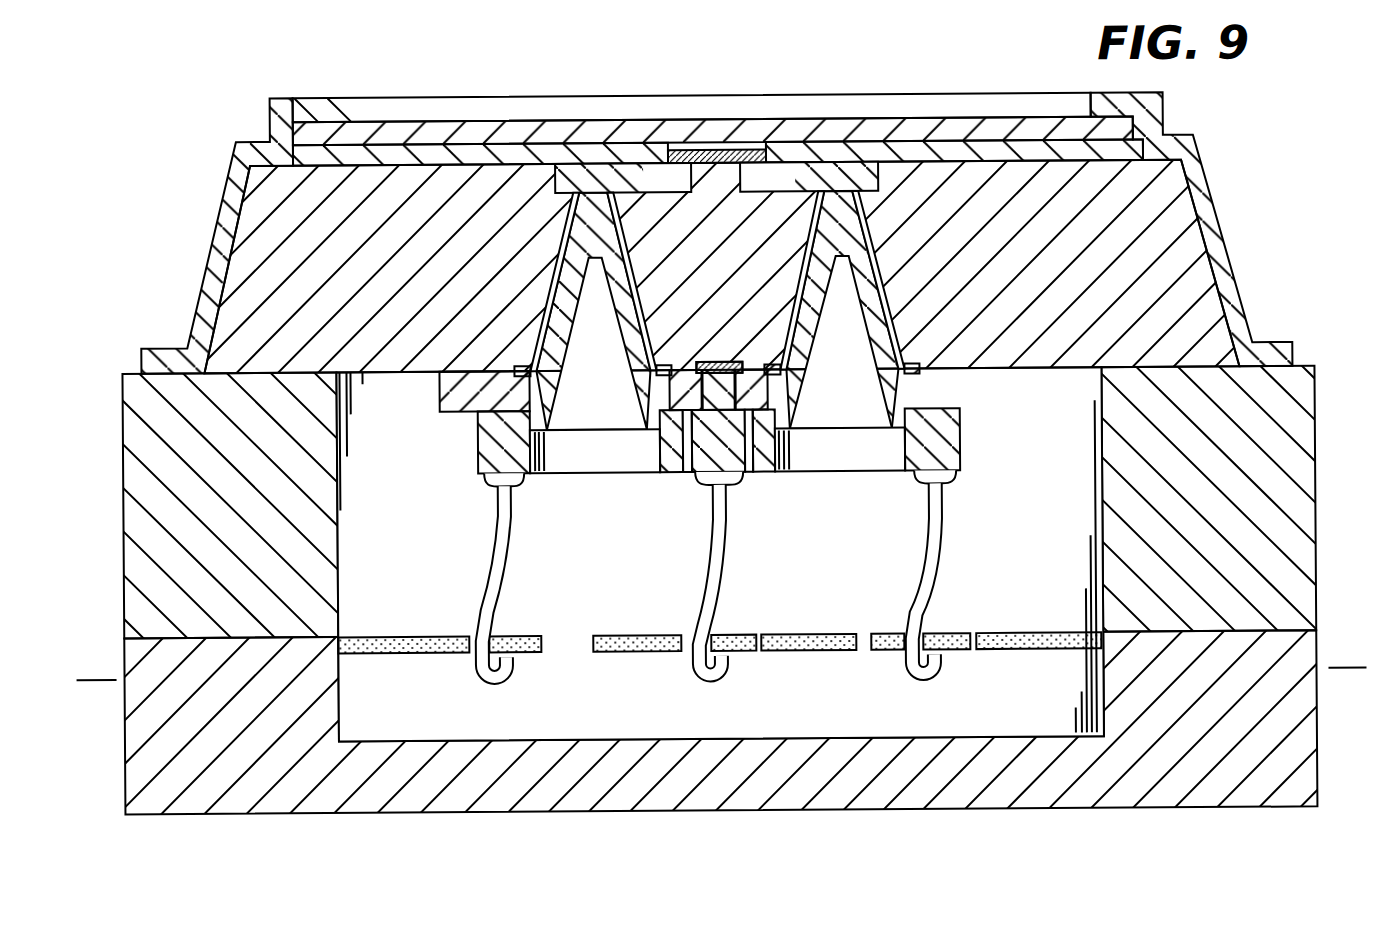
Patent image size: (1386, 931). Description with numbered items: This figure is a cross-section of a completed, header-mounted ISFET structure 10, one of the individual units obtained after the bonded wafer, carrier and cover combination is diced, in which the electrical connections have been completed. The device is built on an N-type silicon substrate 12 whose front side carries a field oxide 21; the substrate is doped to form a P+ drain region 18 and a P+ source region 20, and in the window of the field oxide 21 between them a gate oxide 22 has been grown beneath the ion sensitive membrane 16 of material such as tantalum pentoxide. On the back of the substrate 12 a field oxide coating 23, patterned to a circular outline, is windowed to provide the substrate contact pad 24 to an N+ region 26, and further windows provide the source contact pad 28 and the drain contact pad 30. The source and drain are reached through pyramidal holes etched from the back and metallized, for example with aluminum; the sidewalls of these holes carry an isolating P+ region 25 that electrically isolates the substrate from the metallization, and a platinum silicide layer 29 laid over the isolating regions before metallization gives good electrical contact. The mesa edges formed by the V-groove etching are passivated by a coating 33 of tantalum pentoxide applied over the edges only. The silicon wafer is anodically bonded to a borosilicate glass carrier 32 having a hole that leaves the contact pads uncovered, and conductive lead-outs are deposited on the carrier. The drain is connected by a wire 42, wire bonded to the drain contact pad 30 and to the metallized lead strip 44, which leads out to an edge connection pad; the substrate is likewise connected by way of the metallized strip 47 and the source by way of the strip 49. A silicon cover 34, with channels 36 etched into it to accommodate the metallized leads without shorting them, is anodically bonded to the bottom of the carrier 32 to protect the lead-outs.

The section line 10 is at (75, 690).
The N-type silicon substrate 12 is at (257, 200).
The ion sensitive membrane 16 is at (398, 128).
The P+ drain region 18 is at (632, 168).
The P+ source region 20 is at (818, 168).
The field oxide 21 is at (469, 150).
The gate oxide 22 is at (736, 150).
The field oxide coating 23 is at (441, 397).
The substrate contact pad 24 is at (740, 462).
The isolating P+ region 25 is at (887, 213).
The N+ region 26 is at (744, 362).
The source contact pad 28 is at (948, 450).
The platinum silicide layer 29 is at (887, 289).
The drain contact pad 30 is at (477, 451).
The borosilicate glass carrier 32 is at (130, 470).
The passivation coating 33 is at (218, 252).
The silicon cover 34 is at (122, 755).
The channels 36 is at (418, 708).
The wire 42 is at (497, 566).
The metallized lead strip 44 is at (532, 657).
The metallized strip 47 is at (748, 657).
The metallized strip 49 is at (962, 653).